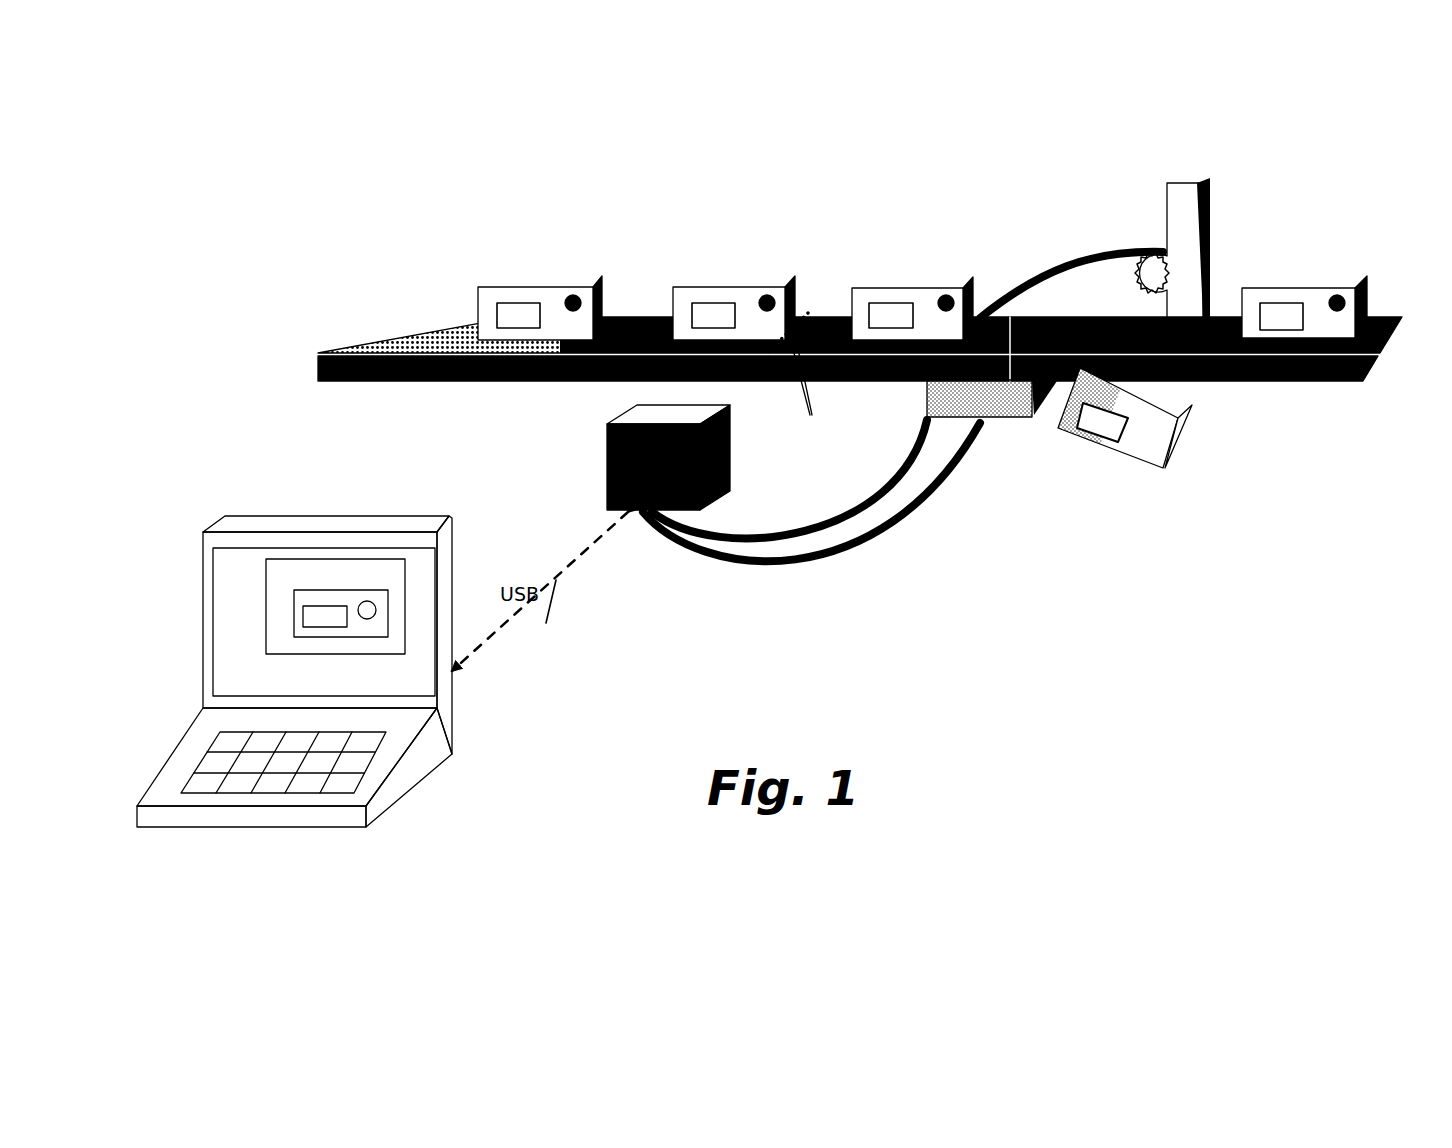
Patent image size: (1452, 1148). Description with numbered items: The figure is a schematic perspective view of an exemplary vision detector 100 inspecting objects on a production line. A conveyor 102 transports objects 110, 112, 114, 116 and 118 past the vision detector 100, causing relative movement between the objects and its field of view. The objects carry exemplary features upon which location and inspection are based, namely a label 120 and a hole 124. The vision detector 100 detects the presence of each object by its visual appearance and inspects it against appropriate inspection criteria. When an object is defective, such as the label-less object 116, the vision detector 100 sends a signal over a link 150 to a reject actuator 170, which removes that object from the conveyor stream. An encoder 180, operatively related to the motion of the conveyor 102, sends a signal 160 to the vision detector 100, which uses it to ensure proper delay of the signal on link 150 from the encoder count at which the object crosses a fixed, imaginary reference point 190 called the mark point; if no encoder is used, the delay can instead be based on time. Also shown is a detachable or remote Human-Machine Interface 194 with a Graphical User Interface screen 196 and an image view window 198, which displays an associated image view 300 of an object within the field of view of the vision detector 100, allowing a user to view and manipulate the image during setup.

The vision detector 100 is at (627, 478).
The conveyor 102 is at (860, 369).
The object 110 is at (579, 289).
The object 112 is at (748, 289).
The object 114 is at (955, 289).
The label-less object 116 is at (1169, 429).
The object 118 is at (1328, 288).
The label 120 is at (904, 360).
The hole 124 is at (949, 253).
The link 150 is at (907, 395).
The signal 160 is at (813, 500).
The reject actuator 170 is at (1225, 247).
The encoder 180 is at (1048, 422).
The mark point 190 is at (824, 372).
The Human-Machine Interface (HMI) 194 is at (257, 503).
The Graphical User Interface (GUI) screen 196 is at (220, 603).
The image view window 198 is at (371, 656).
The image view 300 is at (398, 587).